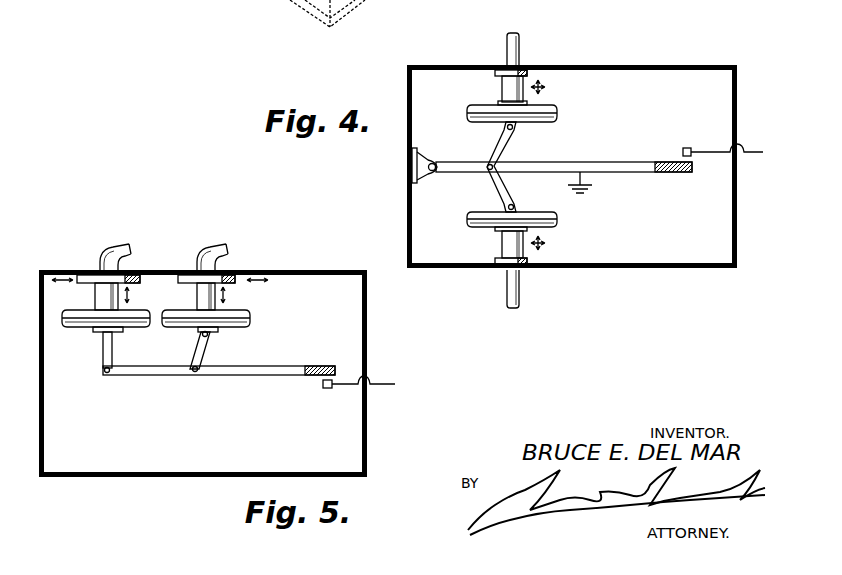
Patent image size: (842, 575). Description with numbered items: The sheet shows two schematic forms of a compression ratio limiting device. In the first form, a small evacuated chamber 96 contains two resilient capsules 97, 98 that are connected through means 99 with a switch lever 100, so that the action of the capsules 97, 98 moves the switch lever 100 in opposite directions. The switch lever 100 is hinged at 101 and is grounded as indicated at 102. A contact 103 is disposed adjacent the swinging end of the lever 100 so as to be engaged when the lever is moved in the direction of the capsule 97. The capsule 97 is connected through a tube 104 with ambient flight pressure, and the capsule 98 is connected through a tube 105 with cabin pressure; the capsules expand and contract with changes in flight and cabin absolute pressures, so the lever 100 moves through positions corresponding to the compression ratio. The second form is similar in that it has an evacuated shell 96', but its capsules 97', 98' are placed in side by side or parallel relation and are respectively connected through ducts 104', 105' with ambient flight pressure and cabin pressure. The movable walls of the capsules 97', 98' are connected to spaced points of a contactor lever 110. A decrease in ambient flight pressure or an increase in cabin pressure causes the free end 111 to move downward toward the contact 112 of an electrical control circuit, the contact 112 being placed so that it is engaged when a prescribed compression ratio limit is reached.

In FIG. 4, the evacuated chamber 96 is at (572, 150).
In FIG. 4, the resilient capsule 97 is at (525, 96).
In FIG. 4, the resilient capsule 98 is at (528, 238).
In FIG. 4, the connecting means 99 is at (501, 158).
In FIG. 4, the switch lever 100 is at (630, 163).
In FIG. 4, the hinge 101 is at (441, 162).
In FIG. 4, the ground 102 is at (582, 185).
In FIG. 4, the contact 103 is at (690, 148).
In FIG. 4, the tube 104 is at (536, 41).
In FIG. 4, the tube 105 is at (541, 289).
In FIG. 5, the evacuated shell 96' is at (203, 374).
In FIG. 5, the capsule 97' is at (101, 324).
In FIG. 5, the capsule 98' is at (226, 323).
In FIG. 5, the duct 104' is at (103, 251).
In FIG. 5, the duct 105' is at (218, 247).
In FIG. 5, the contactor lever 110 is at (250, 375).
In FIG. 5, the free end 111 is at (312, 366).
In FIG. 5, the contact 112 is at (323, 388).